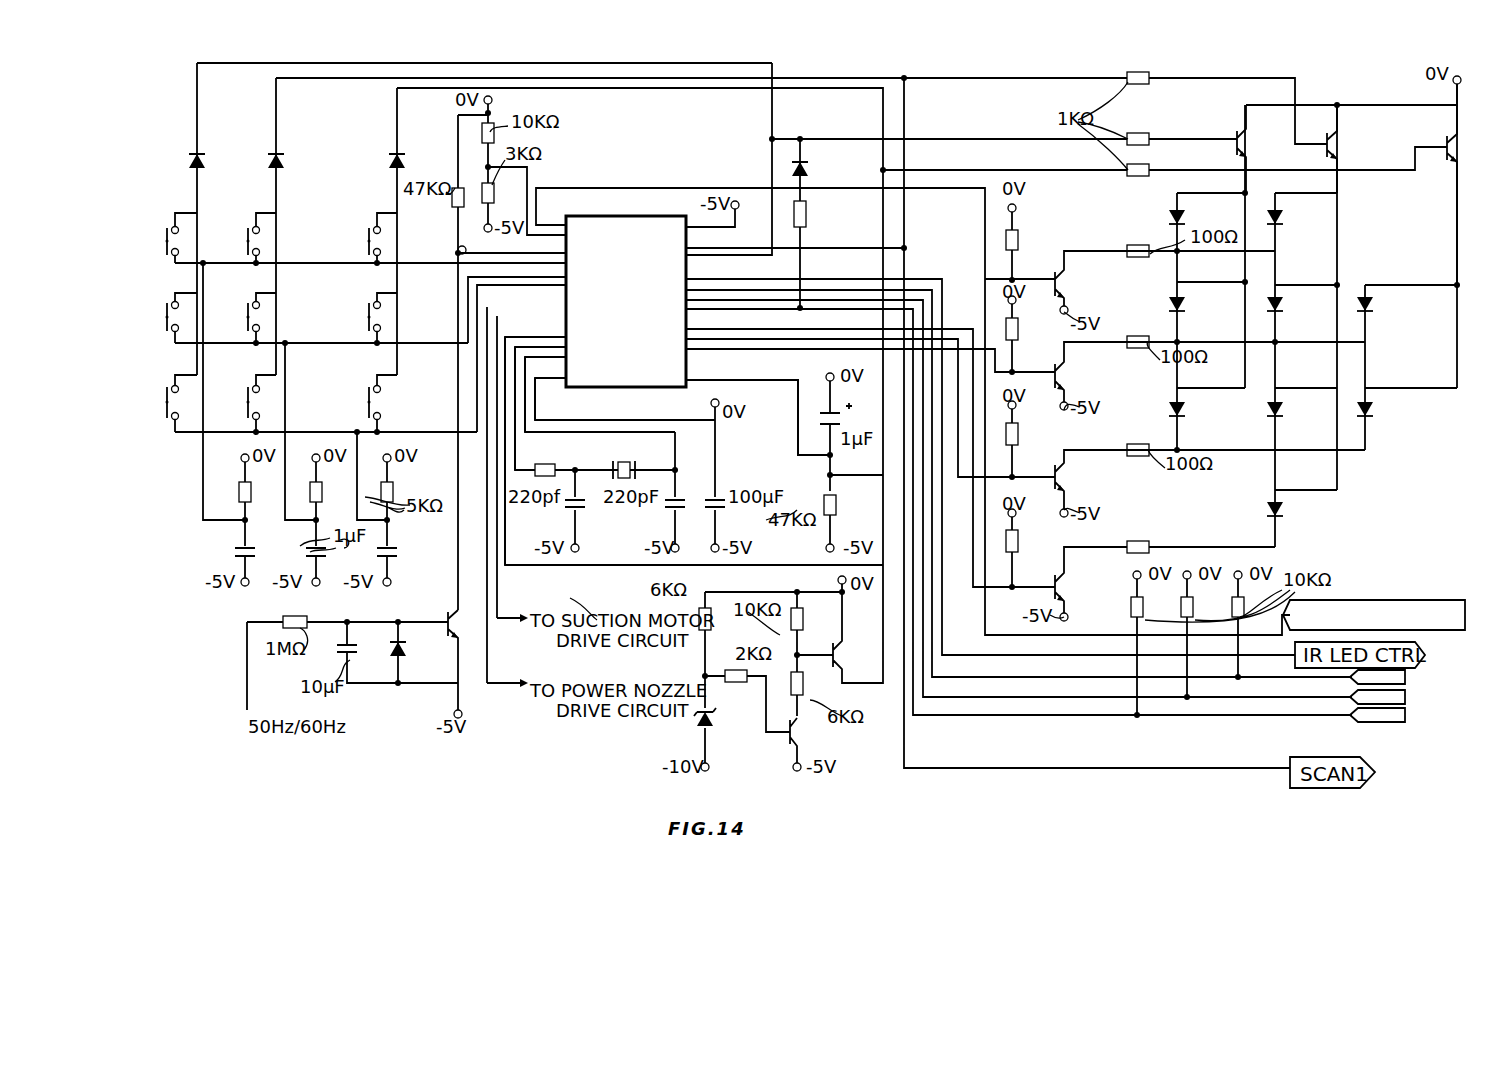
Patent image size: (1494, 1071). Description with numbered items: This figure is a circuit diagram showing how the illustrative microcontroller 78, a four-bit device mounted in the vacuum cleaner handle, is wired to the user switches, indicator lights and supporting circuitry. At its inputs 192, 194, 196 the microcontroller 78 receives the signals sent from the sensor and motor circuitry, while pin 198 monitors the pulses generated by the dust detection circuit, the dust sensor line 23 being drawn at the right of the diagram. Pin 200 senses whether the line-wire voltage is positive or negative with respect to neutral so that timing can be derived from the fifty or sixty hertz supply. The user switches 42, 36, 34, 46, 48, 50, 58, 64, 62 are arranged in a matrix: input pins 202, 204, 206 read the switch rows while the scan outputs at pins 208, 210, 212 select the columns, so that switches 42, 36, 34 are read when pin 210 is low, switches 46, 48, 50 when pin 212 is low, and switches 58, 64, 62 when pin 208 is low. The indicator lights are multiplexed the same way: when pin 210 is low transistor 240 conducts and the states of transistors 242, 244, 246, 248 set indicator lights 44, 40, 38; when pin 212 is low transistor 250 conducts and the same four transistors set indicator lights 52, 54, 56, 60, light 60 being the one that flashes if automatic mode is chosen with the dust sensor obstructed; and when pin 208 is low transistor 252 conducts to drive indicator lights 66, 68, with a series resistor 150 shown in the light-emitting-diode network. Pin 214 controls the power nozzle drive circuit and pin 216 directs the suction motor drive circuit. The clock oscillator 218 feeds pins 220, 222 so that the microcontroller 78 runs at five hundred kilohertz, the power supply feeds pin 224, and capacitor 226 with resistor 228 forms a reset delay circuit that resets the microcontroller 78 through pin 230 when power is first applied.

The microcontroller 78 is at (620, 216).
The switch 42 is at (175, 226).
The switch 46 is at (253, 229).
The switch 58 is at (372, 230).
The switch 36 is at (173, 302).
The switch 48 is at (253, 304).
The switch 64 is at (400, 322).
The switch 34 is at (173, 386).
The switch 50 is at (253, 390).
The switch 62 is at (383, 416).
The pin 202 is at (288, 264).
The pin 204 is at (305, 342).
The pin 206 is at (300, 432).
The pin 200 is at (493, 249).
The pin 198 is at (546, 218).
The pin 210 is at (733, 258).
The pin 212 is at (838, 260).
The pin 208 is at (522, 566).
The pin 220 is at (580, 432).
The pin 222 is at (515, 460).
The pin 224 is at (612, 422).
The clock oscillator 218 is at (598, 528).
The capacitor 226 is at (826, 424).
The resistor 228 is at (826, 505).
The pin 230 is at (752, 385).
The pin 216 is at (482, 645).
The pin 214 is at (499, 690).
The transistor 242 is at (1050, 262).
The transistor 244 is at (1056, 356).
The transistor 246 is at (1059, 456).
The transistor 248 is at (1059, 566).
The resistor 150 is at (1137, 541).
The indicator light 44 is at (1164, 213).
The indicator light 40 is at (1164, 300).
The indicator light 38 is at (1164, 405).
The indicator light 52 is at (1282, 216).
The indicator light 54 is at (1284, 314).
The indicator light 56 is at (1282, 416).
The indicator light 60 is at (1264, 512).
The indicator light 68 is at (1357, 298).
The indicator light 66 is at (1353, 403).
The transistor 240 is at (1234, 130).
The transistor 250 is at (1334, 146).
The transistor 252 is at (1445, 156).
The input 192 is at (1405, 677).
The input 194 is at (1405, 697).
The input 196 is at (1405, 715).
The dust sensor line 23 is at (1388, 615).